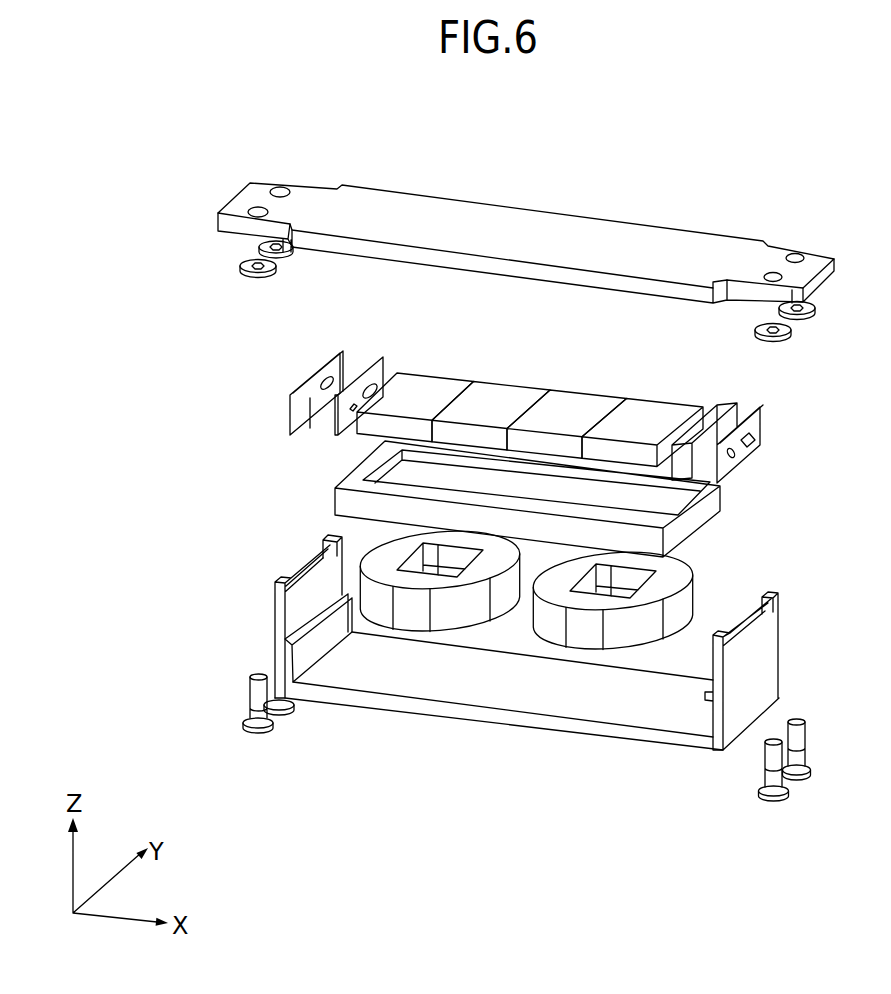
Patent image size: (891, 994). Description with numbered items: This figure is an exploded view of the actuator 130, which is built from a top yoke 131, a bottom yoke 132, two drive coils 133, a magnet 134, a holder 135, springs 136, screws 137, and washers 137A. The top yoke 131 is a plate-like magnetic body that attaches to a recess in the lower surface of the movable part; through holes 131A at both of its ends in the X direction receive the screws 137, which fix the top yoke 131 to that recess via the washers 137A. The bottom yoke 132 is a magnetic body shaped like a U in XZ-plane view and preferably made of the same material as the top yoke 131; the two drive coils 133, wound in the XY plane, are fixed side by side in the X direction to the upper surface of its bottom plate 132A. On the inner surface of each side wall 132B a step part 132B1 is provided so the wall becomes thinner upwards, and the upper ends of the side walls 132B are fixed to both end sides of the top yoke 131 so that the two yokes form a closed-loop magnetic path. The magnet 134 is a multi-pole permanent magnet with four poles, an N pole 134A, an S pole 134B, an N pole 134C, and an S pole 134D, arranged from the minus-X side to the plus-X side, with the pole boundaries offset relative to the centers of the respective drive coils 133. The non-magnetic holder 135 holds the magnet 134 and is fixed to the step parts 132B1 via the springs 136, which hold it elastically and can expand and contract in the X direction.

The actuator 130 is at (799, 135).
The top yoke 131 is at (535, 236).
The through holes 131A is at (796, 256).
The bottom yoke 132 is at (461, 690).
The bottom plate 132A is at (612, 745).
The side wall 132B is at (247, 609).
The step part 132B1 is at (313, 592).
The drive coils 133 is at (410, 624).
The magnet 134 is at (545, 377).
The N pole 134A is at (438, 390).
The S pole 134B is at (513, 400).
The N pole 134C is at (592, 410).
The S pole 134D is at (654, 408).
The holder 135 is at (698, 532).
The springs 136 is at (757, 427).
The screws 137 is at (774, 800).
The washers 137A is at (798, 320).